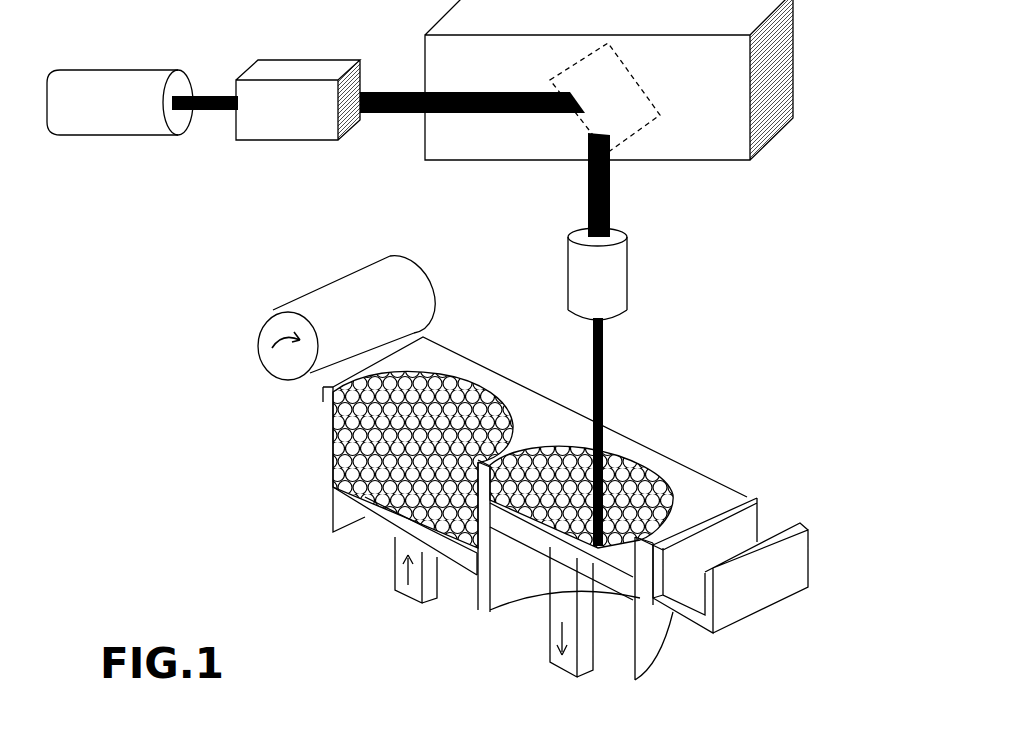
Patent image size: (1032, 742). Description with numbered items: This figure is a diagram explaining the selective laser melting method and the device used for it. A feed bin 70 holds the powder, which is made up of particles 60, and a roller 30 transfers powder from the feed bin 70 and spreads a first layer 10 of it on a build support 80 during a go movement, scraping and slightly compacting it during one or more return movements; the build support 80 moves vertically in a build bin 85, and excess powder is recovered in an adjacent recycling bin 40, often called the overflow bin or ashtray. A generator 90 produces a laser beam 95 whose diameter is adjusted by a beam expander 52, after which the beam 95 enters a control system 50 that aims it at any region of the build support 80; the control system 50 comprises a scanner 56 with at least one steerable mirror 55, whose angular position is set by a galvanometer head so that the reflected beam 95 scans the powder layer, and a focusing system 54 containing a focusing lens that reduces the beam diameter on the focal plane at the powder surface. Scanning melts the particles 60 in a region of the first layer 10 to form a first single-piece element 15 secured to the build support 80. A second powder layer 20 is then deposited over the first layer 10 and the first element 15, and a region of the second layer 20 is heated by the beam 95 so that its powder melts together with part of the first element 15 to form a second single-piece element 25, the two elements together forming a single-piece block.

The first layer 10 is at (500, 496).
The first single-piece element 15 is at (567, 518).
The second powder layer 20 is at (500, 478).
The second single-piece element 25 is at (548, 495).
The roller 30 is at (342, 297).
The recycling bin 40 is at (762, 577).
The control system 50 is at (777, 76).
The beam expander 52 is at (303, 72).
The focusing system 54 is at (612, 275).
The steerable mirror 55 is at (613, 103).
The scanner 56 is at (666, 80).
The particles 60 is at (345, 468).
The feed bin 70 is at (333, 425).
The build support 80 is at (528, 512).
The build bin 85 is at (660, 645).
The generator 90 is at (92, 92).
The laser beam 95 is at (588, 197).